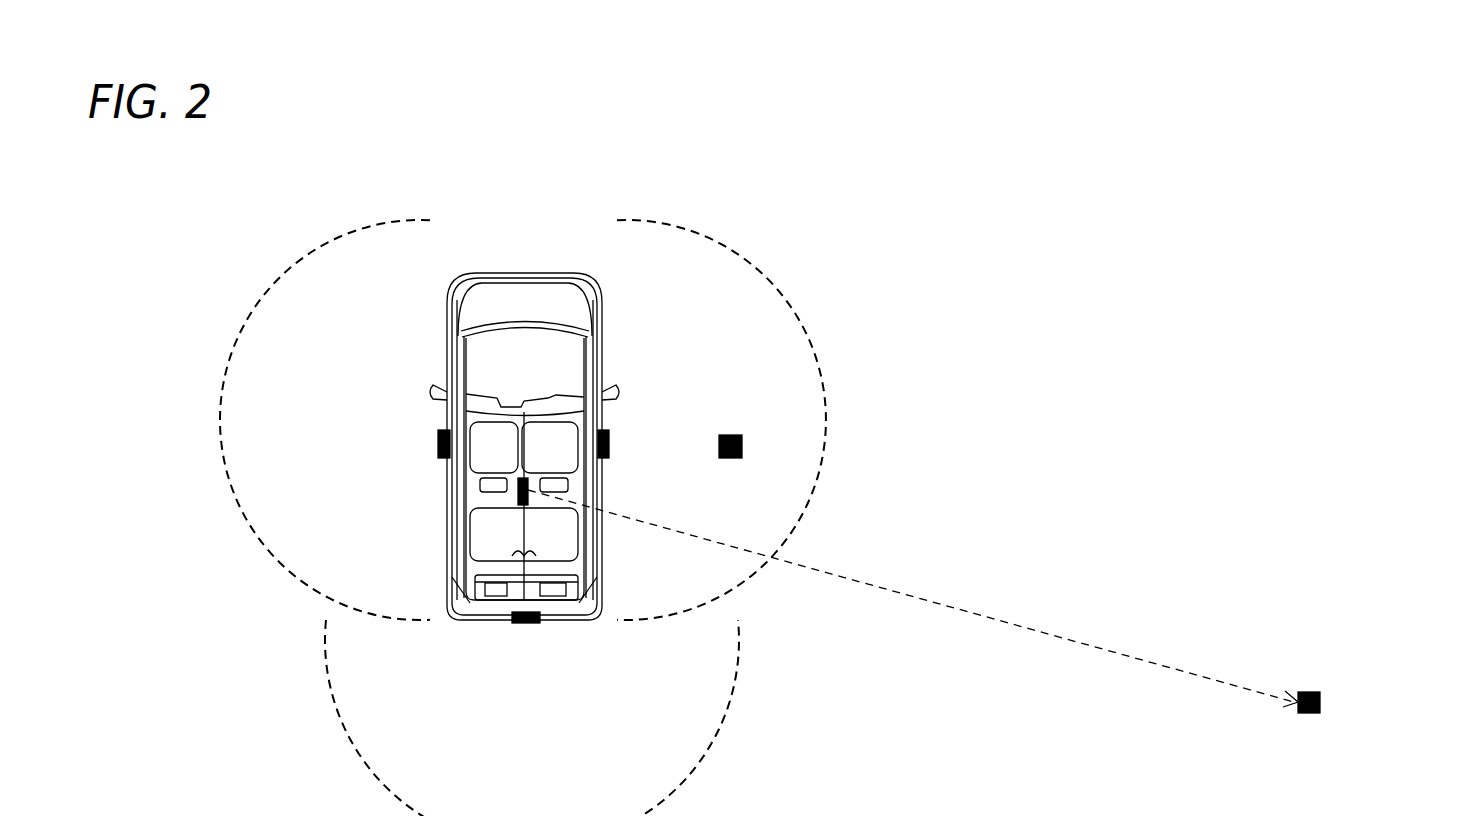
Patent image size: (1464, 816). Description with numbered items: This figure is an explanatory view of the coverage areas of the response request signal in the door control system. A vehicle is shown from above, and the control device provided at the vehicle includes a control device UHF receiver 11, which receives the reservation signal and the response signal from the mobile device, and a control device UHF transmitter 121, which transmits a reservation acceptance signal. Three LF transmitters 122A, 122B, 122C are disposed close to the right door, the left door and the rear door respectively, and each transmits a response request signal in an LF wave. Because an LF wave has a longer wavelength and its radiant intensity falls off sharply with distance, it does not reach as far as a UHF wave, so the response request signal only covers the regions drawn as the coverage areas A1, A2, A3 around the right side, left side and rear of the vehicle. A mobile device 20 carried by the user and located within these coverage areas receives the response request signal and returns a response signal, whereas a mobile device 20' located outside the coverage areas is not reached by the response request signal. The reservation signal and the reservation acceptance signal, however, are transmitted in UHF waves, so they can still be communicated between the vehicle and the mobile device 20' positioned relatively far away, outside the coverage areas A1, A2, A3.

The control device UHF receiver 11 is at (485, 446).
The control device UHF transmitter 121 is at (518, 492).
The LF transmitter 122A is at (620, 445).
The LF transmitter 122B is at (428, 447).
The LF transmitter 122C is at (527, 625).
The mobile device 20 is at (821, 431).
The mobile device 20' is at (977, 601).
The coverage area A1 is at (817, 350).
The coverage area A2 is at (267, 551).
The coverage area A3 is at (712, 712).